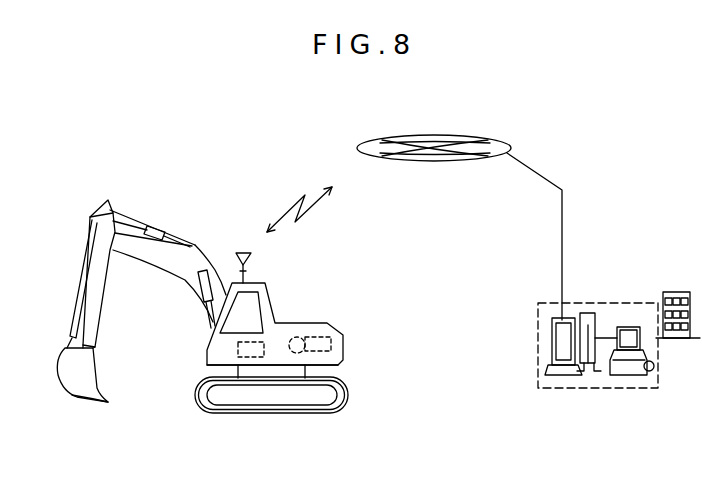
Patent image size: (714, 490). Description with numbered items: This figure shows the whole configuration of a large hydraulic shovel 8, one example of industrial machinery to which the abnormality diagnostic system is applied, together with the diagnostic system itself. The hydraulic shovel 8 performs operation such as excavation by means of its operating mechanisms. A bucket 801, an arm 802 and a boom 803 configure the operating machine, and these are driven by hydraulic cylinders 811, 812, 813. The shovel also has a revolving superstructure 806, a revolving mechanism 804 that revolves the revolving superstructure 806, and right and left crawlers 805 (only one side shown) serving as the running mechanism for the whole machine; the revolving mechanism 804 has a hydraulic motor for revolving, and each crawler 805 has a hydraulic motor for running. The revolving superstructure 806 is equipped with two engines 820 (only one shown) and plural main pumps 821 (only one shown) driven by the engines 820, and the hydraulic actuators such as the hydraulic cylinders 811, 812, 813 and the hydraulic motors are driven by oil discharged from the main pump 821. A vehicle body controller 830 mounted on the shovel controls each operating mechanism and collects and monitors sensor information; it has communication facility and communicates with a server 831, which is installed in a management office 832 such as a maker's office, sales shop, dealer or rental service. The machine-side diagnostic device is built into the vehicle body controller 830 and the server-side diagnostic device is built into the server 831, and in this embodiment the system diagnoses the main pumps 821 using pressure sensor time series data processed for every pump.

The large hydraulic shovel 8 is at (291, 281).
The bucket 801 is at (75, 385).
The arm 802 is at (92, 214).
The boom 803 is at (166, 236).
The revolving mechanism 804 is at (284, 373).
The crawler 805 is at (210, 414).
The revolving superstructure 806 is at (337, 326).
The hydraulic cylinder 811 is at (73, 312).
The hydraulic cylinder 812 is at (140, 220).
The hydraulic cylinder 813 is at (198, 297).
The engine 820 is at (332, 344).
The main pump 821 is at (300, 335).
The vehicle body controller 830 is at (238, 352).
The server 831 is at (634, 303).
The management office 832 is at (680, 291).